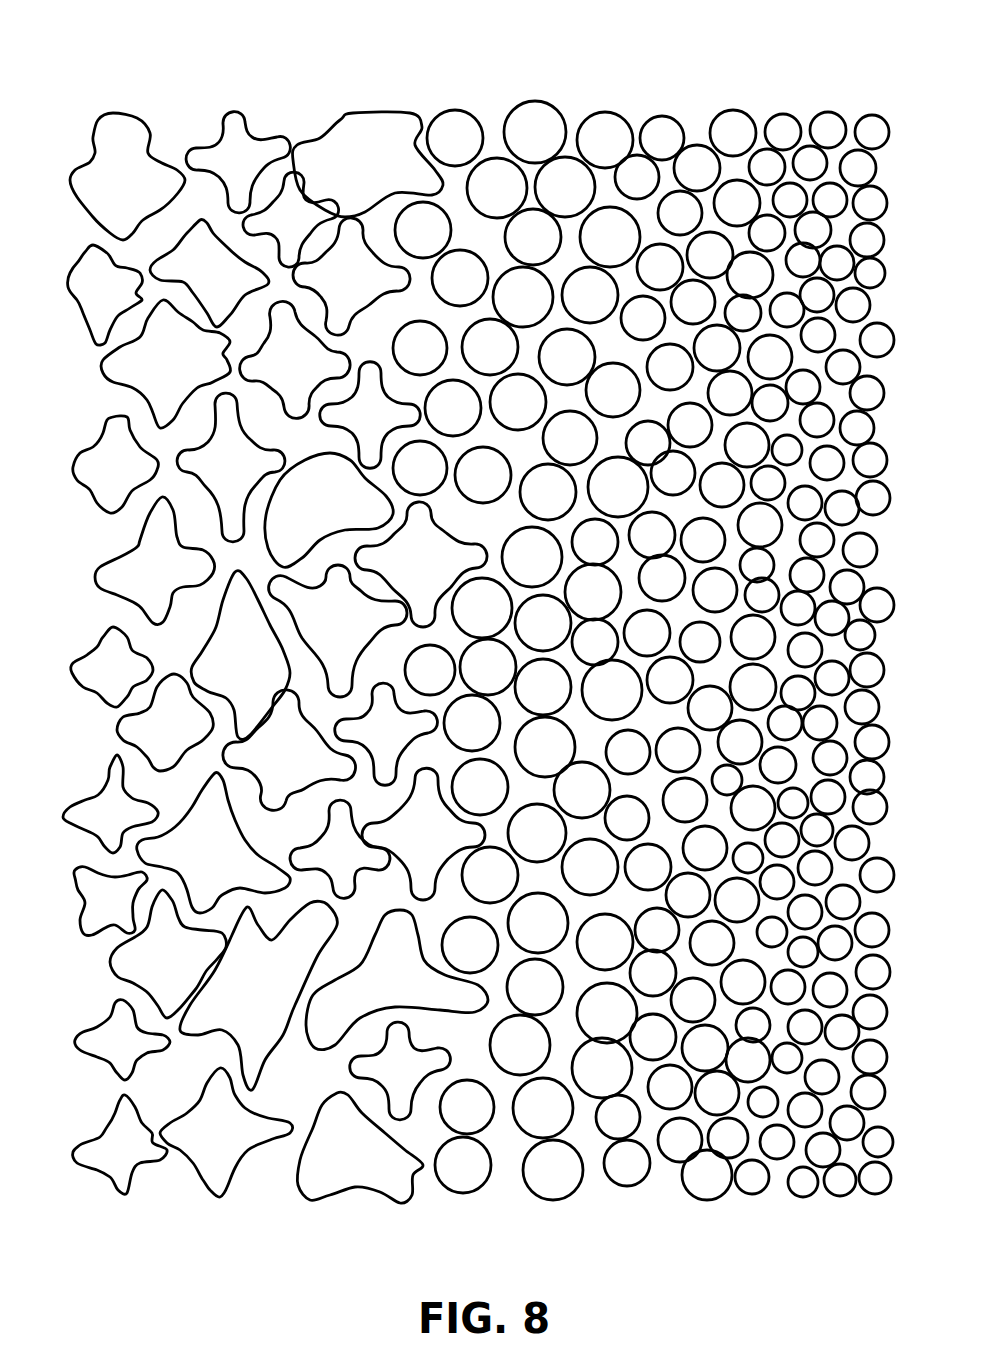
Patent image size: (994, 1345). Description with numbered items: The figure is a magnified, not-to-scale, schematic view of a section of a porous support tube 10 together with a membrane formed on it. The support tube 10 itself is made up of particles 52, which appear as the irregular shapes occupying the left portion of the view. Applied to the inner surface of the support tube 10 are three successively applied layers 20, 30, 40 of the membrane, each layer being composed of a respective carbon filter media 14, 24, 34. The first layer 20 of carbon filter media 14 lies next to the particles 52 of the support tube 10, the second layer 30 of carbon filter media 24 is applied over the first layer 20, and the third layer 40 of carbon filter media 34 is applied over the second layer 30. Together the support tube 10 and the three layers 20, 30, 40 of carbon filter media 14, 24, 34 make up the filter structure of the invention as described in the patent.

The porous support tube 10 is at (485, 95).
The first layer 20 is at (650, 95).
The second layer 30 is at (781, 95).
The third layer 40 is at (781, 95).
The particles 52 is at (303, 1195).
The carbon filter media 14 is at (541, 1193).
The carbon filter media 24 is at (615, 1181).
The carbon filter media 34 is at (832, 1196).